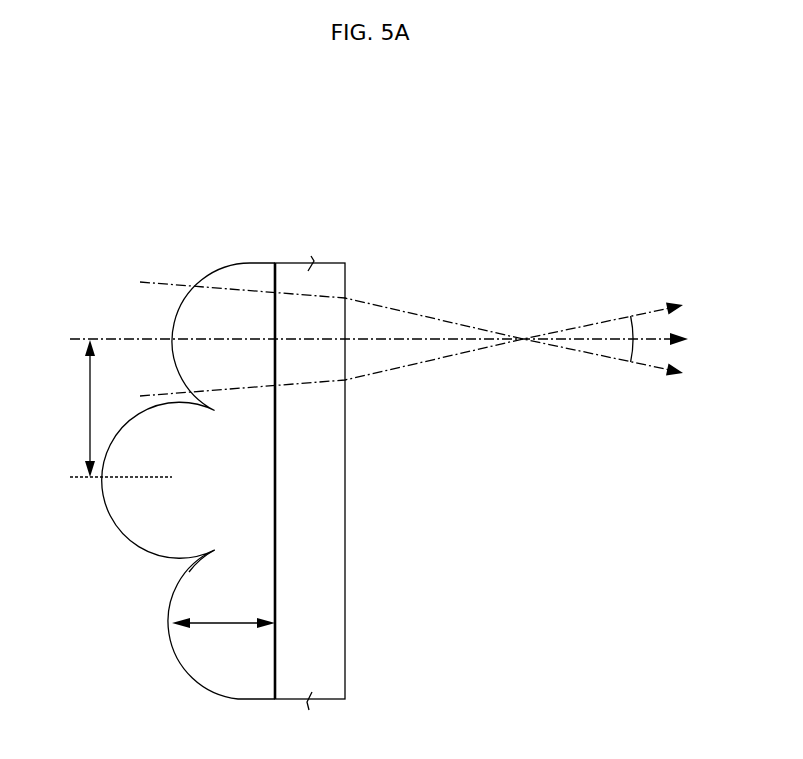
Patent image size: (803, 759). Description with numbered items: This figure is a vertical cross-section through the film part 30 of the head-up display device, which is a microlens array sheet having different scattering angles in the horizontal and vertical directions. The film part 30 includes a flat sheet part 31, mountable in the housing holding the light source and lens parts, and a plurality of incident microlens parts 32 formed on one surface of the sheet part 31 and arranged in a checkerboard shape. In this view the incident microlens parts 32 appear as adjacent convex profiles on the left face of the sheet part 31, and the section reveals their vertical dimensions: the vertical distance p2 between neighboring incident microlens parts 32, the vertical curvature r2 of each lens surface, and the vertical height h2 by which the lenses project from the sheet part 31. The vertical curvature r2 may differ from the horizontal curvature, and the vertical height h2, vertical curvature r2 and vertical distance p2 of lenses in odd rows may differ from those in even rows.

The film part 30 is at (223, 410).
The sheet part 31 is at (310, 444).
The incident microlens part 32 is at (237, 262).
The vertical distance p2 is at (113, 408).
The vertical curvature r2 is at (189, 572).
The vertical height h2 is at (223, 638).